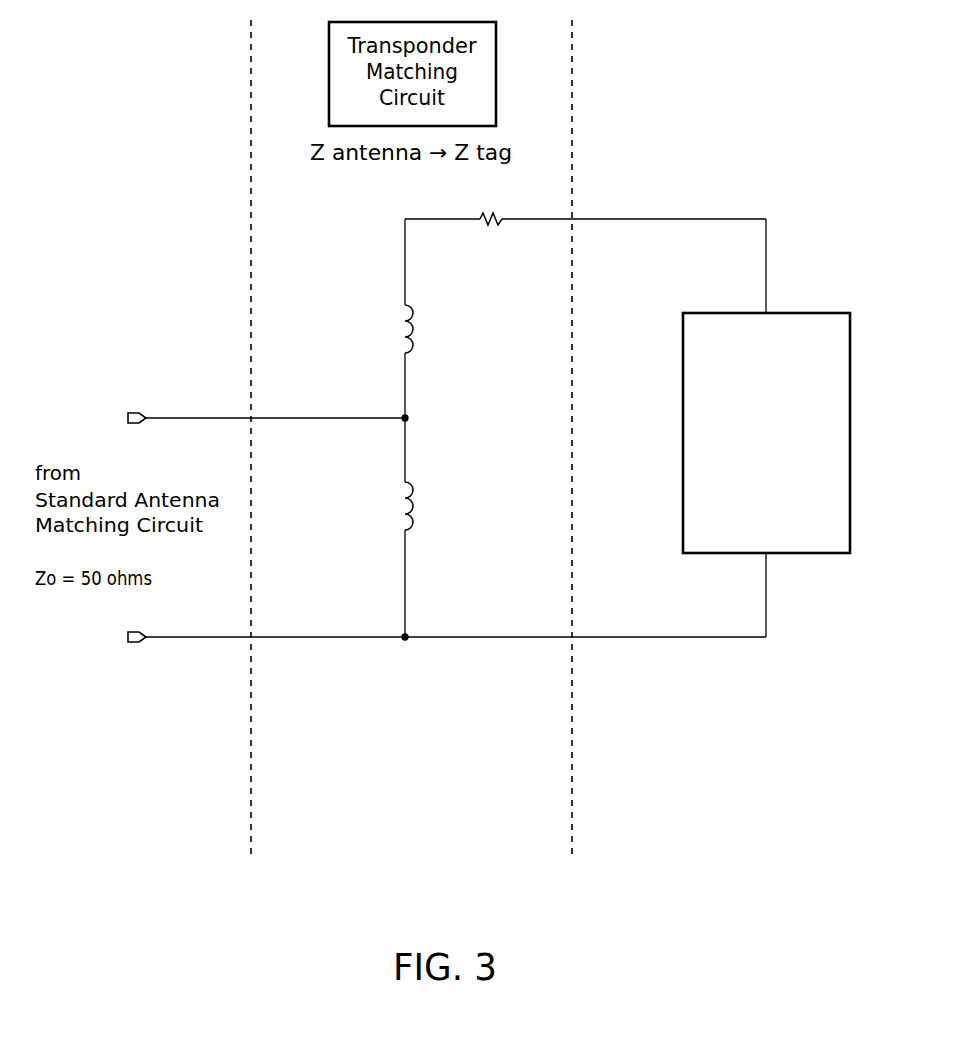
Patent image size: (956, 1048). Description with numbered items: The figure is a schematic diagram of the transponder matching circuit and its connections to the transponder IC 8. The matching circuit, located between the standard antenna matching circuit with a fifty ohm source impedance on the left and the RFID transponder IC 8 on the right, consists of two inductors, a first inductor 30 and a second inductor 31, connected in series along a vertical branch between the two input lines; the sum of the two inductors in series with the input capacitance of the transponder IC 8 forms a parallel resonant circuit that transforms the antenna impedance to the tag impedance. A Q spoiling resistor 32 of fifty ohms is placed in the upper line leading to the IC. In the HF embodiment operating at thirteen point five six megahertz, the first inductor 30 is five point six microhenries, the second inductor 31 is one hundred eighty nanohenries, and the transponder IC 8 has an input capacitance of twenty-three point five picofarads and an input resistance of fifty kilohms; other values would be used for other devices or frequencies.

The transponder IC 8 is at (766, 433).
The inductor L1 30 is at (399, 319).
The inductor L2 31 is at (399, 495).
The Q spoiling resistor 32 is at (526, 262).